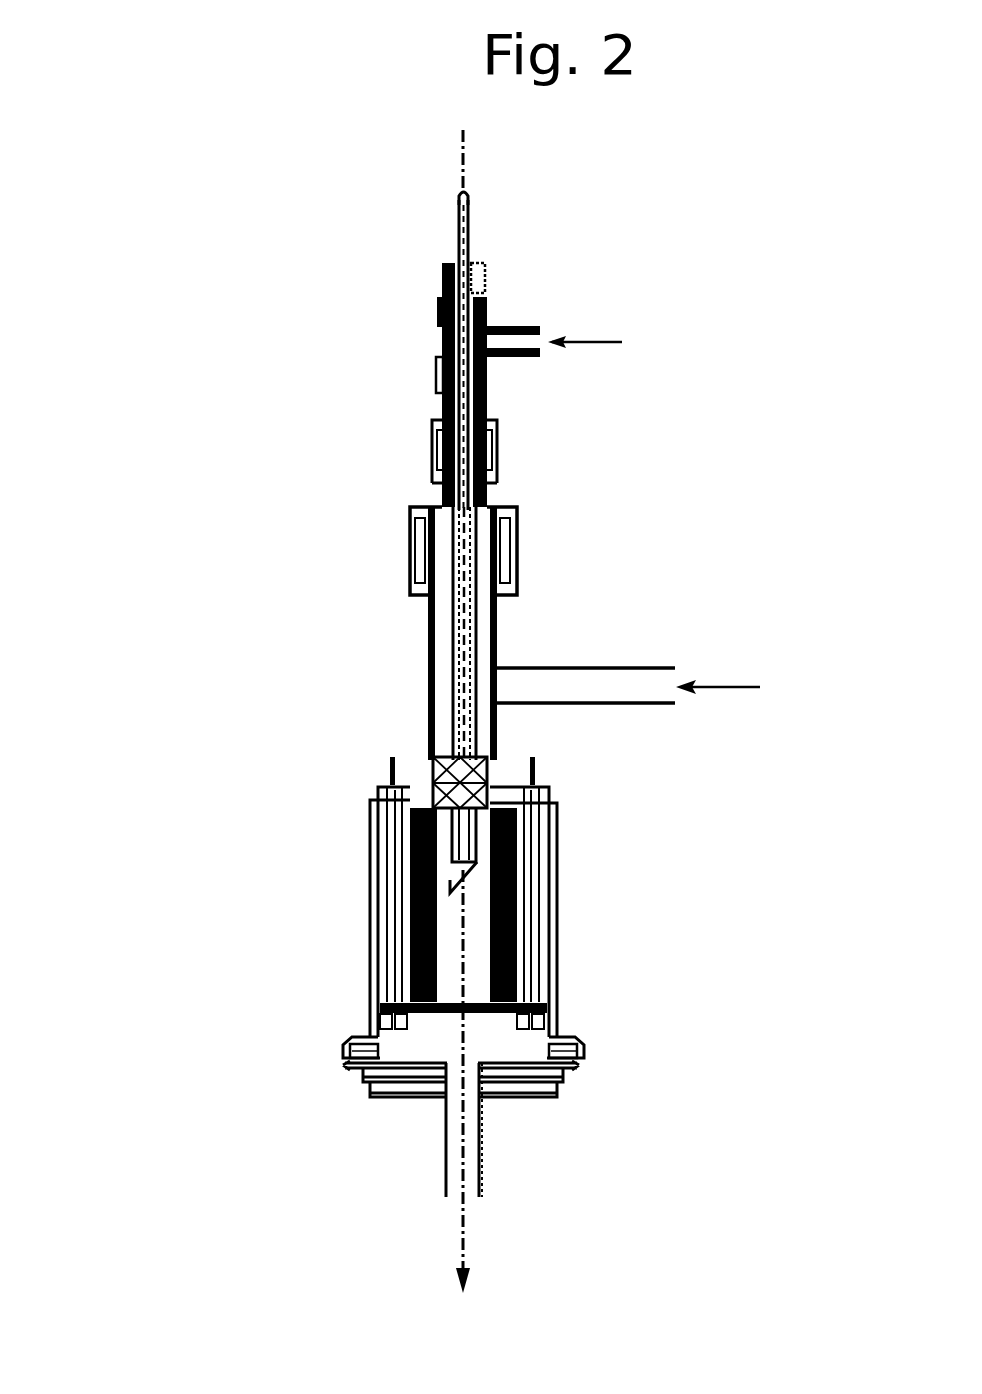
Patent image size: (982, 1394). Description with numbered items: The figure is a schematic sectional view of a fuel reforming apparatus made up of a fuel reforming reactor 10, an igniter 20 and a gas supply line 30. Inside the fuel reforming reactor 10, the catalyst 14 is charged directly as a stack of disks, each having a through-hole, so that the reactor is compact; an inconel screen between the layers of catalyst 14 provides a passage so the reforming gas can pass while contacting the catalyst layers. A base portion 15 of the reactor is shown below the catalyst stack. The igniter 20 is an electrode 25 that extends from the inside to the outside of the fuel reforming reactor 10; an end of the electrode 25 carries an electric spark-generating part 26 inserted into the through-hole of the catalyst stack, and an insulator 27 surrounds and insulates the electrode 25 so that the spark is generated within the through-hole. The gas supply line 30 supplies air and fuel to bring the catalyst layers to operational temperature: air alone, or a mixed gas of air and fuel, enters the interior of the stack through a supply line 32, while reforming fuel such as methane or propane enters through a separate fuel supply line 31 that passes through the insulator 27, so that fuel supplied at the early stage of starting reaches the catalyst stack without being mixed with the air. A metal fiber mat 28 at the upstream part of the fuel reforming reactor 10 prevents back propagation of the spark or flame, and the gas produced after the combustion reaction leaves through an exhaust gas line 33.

The fuel reforming reactor 10 is at (755, 933).
The catalyst 14 is at (517, 933).
The base plate 15 is at (490, 1010).
The igniter 20 is at (190, 915).
The electrode 25 is at (458, 230).
The electric spark-generating part 26 is at (447, 893).
The insulator 27 is at (452, 847).
The metal fiber mat 28 is at (487, 782).
The gas supply line 30 is at (627, 262).
The fuel supply line 31 is at (500, 327).
The supply line 32 is at (572, 668).
The exhaust gas line 33 is at (481, 1160).